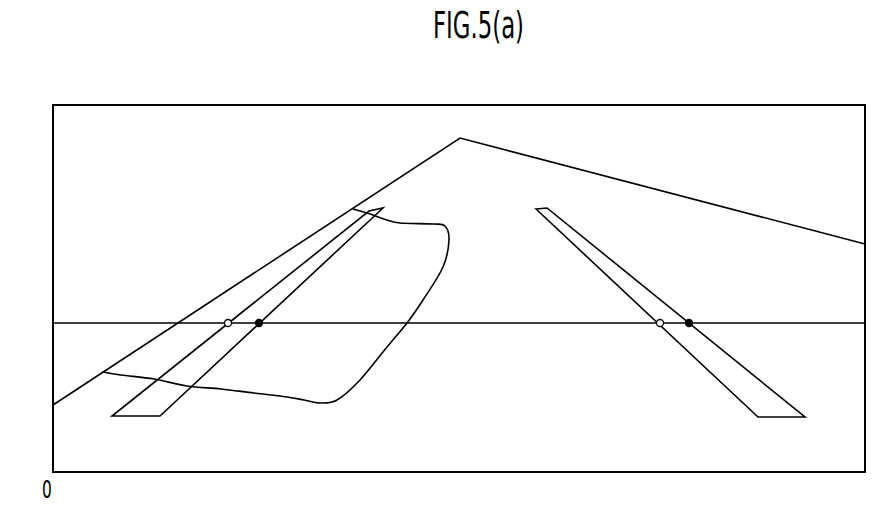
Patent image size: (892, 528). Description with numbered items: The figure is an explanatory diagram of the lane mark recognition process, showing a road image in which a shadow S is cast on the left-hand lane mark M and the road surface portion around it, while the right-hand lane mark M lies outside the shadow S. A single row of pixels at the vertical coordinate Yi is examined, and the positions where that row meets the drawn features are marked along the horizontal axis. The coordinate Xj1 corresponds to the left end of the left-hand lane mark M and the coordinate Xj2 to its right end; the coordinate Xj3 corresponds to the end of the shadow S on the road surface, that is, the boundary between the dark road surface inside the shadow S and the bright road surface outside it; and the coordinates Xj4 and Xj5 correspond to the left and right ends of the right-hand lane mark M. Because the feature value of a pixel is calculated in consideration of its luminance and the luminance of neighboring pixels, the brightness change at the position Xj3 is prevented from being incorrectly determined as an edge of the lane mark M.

The shadow S is at (403, 238).
The lane mark M is at (318, 260).
The row coordinate of pixel Yi is at (446, 321).
The column coordinate of left end of left-hand lane mark Xj1 is at (228, 472).
The column coordinate of right end of left-hand lane mark Xj2 is at (259, 472).
The column coordinate of shadow end on road surface Xj3 is at (407, 472).
The column coordinate of left end of right-hand lane mark Xj4 is at (660, 472).
The column coordinate of right end of right-hand lane mark Xj5 is at (689, 472).